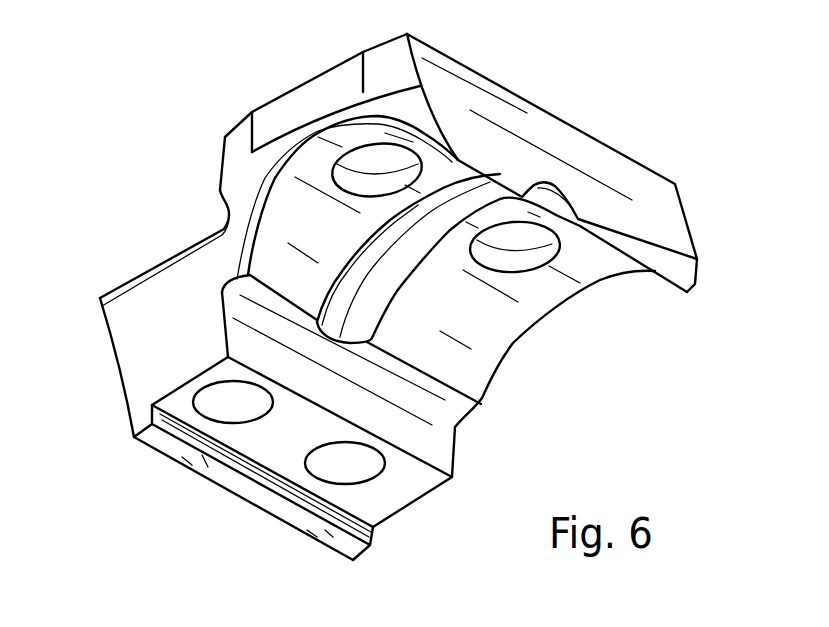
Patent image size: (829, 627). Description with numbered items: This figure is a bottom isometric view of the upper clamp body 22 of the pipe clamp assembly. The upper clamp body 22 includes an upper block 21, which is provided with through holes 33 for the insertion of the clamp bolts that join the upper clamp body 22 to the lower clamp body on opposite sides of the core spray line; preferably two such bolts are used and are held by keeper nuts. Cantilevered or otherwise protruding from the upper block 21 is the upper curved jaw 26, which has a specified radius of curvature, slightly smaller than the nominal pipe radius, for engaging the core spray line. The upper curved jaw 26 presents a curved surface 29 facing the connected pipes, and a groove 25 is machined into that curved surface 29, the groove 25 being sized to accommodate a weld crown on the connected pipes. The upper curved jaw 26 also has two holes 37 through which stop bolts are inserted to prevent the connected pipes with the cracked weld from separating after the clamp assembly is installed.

The upper block 21 is at (133, 343).
The upper clamp body 22 is at (233, 246).
The groove 25 is at (452, 205).
The upper curved jaw 26 is at (673, 225).
The curved surface 29 is at (312, 218).
The through holes 33 is at (338, 462).
The holes 37 is at (370, 157).